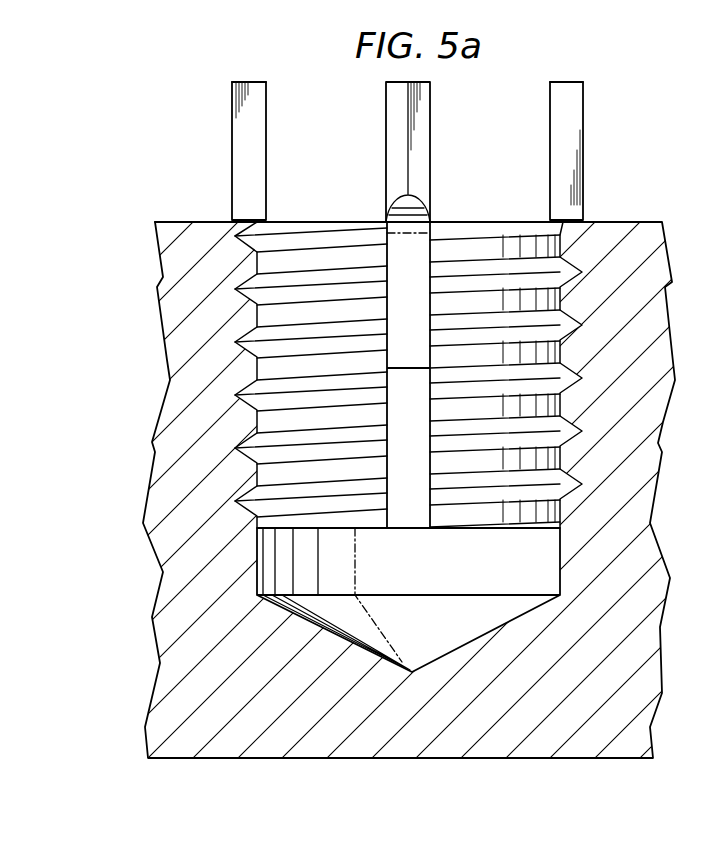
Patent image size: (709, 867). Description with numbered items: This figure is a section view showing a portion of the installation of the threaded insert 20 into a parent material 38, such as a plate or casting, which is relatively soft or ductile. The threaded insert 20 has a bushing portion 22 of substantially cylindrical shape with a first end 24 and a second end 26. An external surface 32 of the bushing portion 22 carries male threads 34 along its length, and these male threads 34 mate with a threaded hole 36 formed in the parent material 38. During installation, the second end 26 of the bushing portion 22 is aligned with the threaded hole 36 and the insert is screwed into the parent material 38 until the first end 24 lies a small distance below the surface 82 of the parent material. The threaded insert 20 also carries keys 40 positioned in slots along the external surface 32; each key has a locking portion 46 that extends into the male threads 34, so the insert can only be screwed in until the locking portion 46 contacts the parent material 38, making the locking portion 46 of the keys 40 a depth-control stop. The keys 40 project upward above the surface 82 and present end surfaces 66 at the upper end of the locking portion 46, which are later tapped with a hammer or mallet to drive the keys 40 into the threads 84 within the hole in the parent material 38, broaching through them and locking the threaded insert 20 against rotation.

The threaded insert 20 is at (560, 292).
The bushing portion 22 is at (298, 470).
The first end 24 is at (323, 222).
The second end 26 is at (475, 528).
The external surface 32 is at (240, 450).
The male threads 34 is at (271, 515).
The threaded hole 36 is at (252, 300).
The parent material 38 is at (165, 358).
The key 40 is at (233, 138).
The locking portion 46 is at (398, 130).
The end surface 66 is at (248, 82).
The surface 82 is at (170, 222).
The threads 84 is at (563, 332).